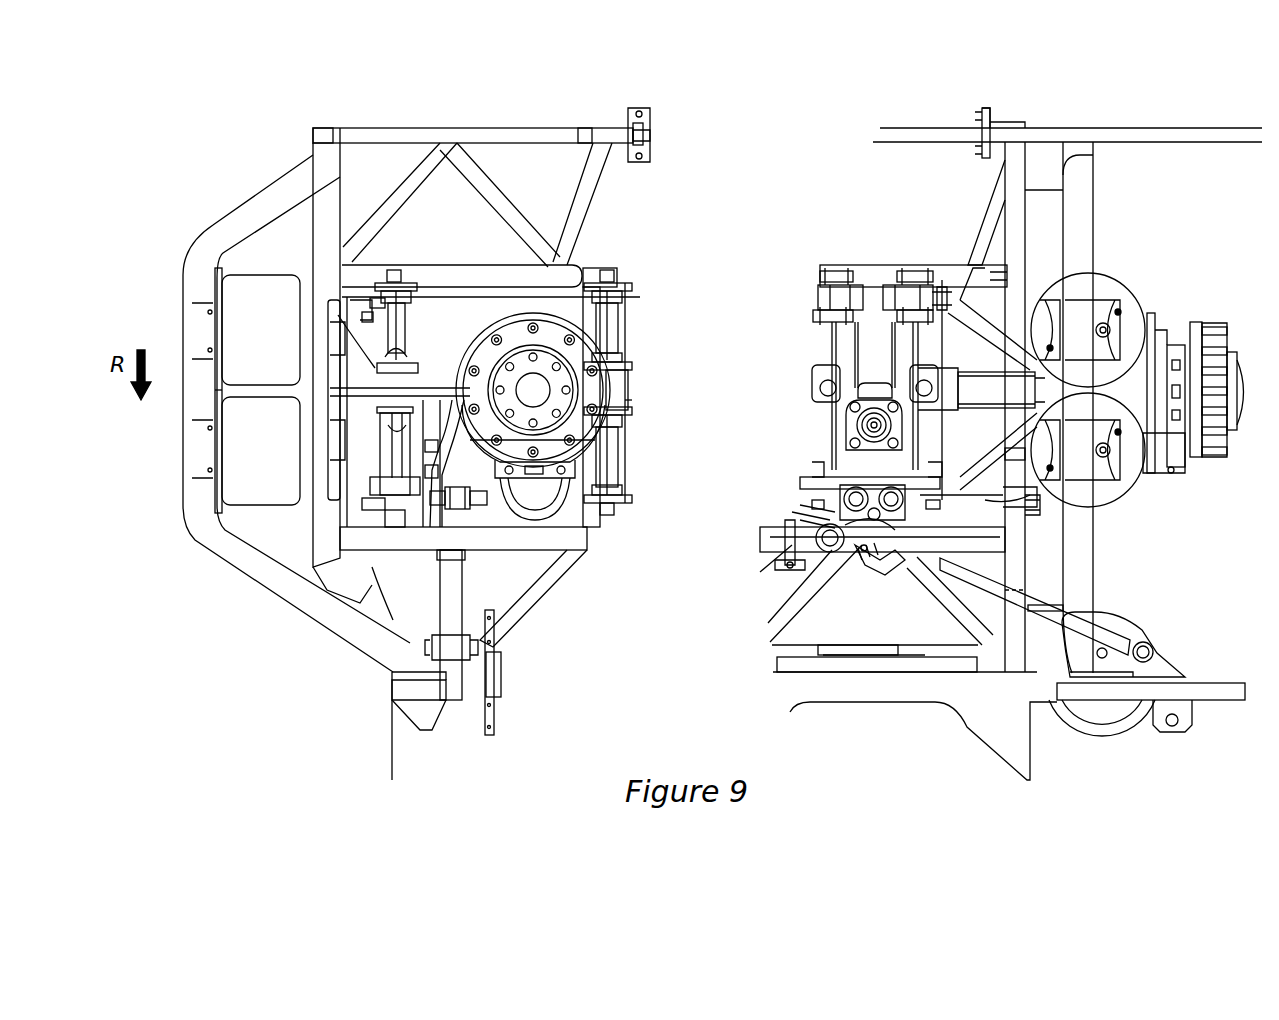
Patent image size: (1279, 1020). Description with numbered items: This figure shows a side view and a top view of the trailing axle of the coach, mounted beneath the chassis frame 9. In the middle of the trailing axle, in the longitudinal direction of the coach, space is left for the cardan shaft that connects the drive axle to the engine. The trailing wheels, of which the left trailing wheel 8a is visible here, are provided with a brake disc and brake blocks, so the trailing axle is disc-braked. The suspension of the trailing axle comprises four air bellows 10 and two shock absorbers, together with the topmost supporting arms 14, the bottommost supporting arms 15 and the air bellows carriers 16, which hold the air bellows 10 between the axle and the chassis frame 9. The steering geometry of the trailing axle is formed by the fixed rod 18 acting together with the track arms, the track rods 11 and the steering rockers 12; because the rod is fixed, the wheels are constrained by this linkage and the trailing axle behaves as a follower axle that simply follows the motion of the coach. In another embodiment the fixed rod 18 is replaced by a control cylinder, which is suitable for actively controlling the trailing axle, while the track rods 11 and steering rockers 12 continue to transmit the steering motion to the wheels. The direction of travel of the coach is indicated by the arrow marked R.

The left trailing wheel 8a is at (655, 461).
The chassis frame 9 is at (500, 180).
The air bellows 10 is at (258, 327).
The track rod 11 is at (985, 498).
The steering rocker 12 is at (868, 555).
The topmost supporting arm 14 is at (397, 338).
The bottommost supporting arm 15 is at (625, 332).
The air bellows carrier 16 is at (437, 388).
The fixed rod 18 is at (1075, 620).